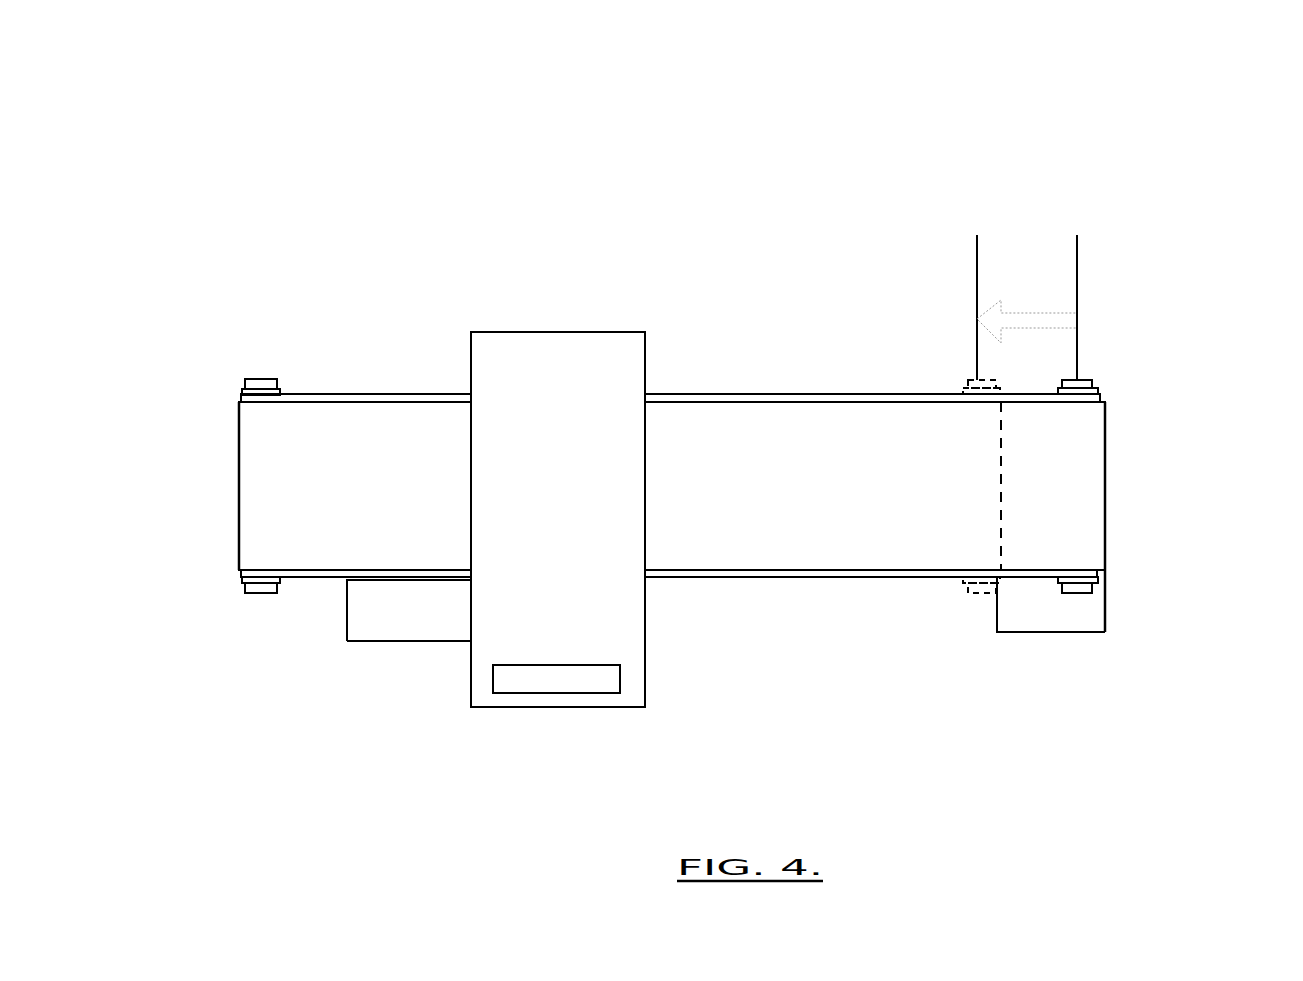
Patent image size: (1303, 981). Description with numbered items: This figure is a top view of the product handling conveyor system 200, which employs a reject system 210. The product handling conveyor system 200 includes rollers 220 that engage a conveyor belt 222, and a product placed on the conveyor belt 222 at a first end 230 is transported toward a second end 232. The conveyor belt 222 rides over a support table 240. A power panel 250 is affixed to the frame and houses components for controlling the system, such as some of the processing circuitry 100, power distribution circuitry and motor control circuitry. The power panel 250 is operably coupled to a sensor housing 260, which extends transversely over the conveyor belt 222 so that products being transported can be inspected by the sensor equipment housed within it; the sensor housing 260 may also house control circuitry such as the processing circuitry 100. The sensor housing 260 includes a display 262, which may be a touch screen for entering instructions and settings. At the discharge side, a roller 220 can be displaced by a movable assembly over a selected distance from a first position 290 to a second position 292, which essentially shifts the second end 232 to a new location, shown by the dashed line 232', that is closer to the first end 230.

The processing circuitry 100 is at (1083, 617).
The product handling conveyor system 200 is at (817, 110).
The reject system 210 is at (1187, 297).
The rollers 220 is at (259, 593).
The conveyor belt 222 is at (785, 423).
The first end 230 is at (237, 355).
The second end 232 is at (1151, 517).
The dashed line 232' is at (1049, 486).
The support table 240 is at (675, 393).
The power panel 250 is at (397, 615).
The sensor housing 260 is at (572, 377).
The display 262 is at (607, 680).
The first position 290 is at (1077, 257).
The second position 292 is at (977, 257).